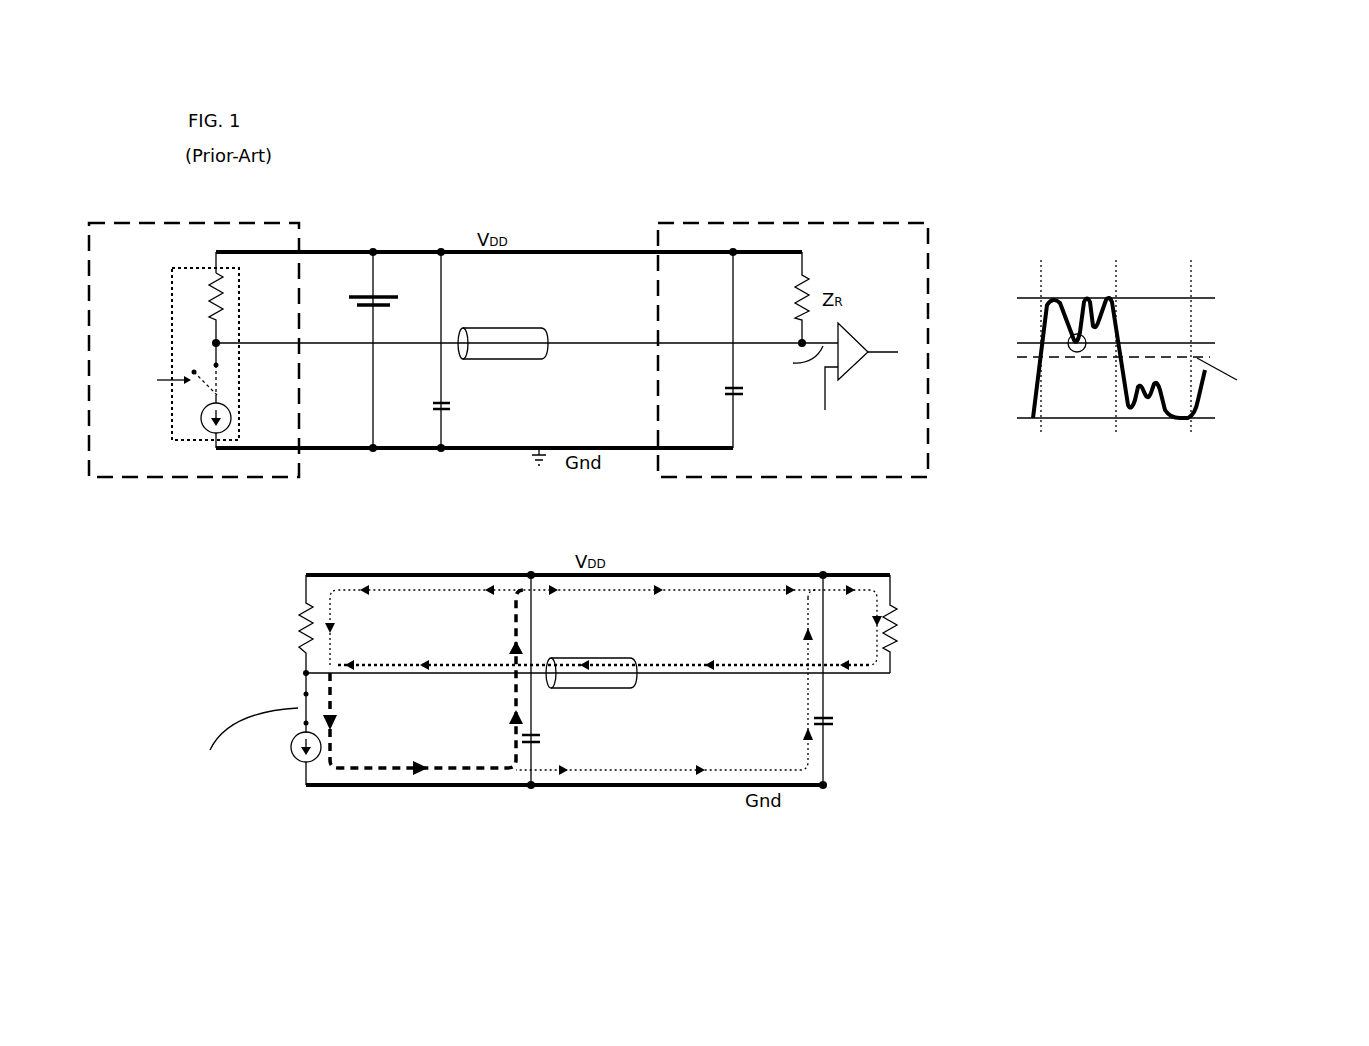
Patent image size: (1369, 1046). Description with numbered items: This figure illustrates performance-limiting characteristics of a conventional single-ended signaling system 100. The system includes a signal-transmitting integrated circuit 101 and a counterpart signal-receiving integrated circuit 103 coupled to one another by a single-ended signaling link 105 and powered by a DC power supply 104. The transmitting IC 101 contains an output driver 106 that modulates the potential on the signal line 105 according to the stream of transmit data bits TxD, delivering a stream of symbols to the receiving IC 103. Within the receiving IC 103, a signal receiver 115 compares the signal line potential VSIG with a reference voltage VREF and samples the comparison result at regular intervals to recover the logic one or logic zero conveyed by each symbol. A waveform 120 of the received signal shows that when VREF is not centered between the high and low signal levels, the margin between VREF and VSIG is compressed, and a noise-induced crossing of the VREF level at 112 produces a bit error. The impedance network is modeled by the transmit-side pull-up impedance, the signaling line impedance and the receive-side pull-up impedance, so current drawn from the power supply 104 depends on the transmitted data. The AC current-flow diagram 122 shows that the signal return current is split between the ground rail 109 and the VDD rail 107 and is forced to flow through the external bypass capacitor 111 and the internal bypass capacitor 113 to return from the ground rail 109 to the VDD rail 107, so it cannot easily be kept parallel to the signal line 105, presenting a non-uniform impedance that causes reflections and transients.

The single-ended signaling system 100 is at (1043, 578).
The signal-transmitting integrated circuit 101 is at (194, 350).
The signal-receiving integrated circuit 103 is at (793, 350).
The DC power supply 104 is at (366, 291).
The single-ended signaling link 105 is at (517, 327).
The output driver 106 is at (243, 305).
The VDD rail 107 is at (597, 251).
The ground rail 109 is at (528, 444).
The external bypass capacitor 111 is at (437, 398).
The noise-induced crossing of the VREF level 112 is at (1075, 352).
The internal bypass capacitor 113 is at (727, 381).
The signal receiver 115 is at (850, 371).
The received signal waveform 120 is at (1080, 380).
The AC current-flow diagram 122 is at (358, 463).